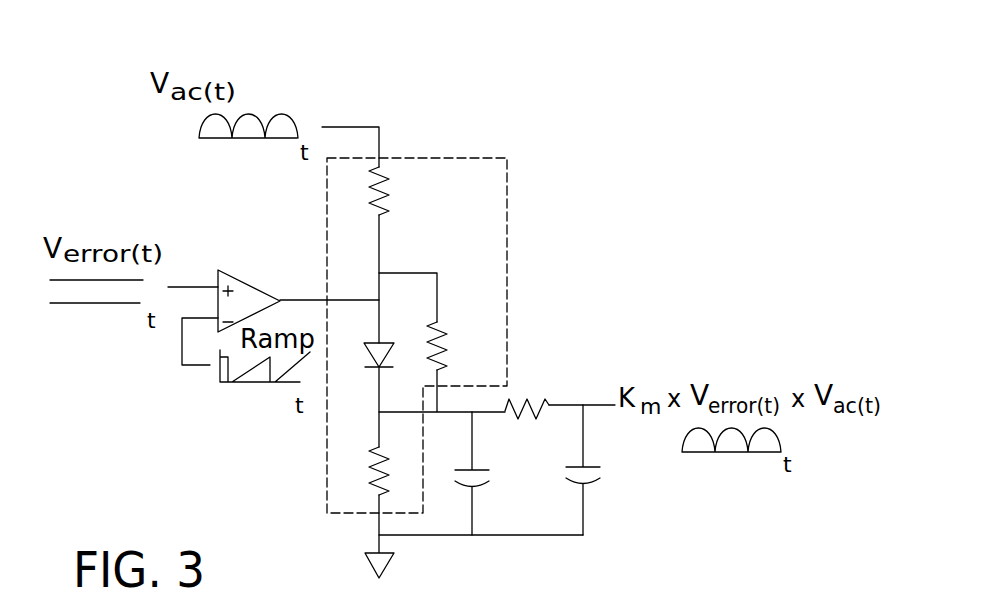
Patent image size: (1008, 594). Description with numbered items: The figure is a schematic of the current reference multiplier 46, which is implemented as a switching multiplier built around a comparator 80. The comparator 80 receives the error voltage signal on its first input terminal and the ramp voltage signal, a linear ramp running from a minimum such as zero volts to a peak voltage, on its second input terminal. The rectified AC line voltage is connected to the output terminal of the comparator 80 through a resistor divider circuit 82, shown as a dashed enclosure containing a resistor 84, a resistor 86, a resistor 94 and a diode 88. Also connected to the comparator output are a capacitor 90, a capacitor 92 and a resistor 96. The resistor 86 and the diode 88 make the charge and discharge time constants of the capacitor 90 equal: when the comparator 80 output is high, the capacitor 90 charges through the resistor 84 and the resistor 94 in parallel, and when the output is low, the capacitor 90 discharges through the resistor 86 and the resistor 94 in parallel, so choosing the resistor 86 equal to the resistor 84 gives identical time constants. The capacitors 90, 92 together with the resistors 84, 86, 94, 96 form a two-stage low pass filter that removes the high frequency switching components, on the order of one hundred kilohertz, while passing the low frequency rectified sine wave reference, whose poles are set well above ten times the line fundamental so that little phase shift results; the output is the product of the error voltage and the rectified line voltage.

The current reference multiplier 46 is at (555, 60).
The comparator 80 is at (249, 283).
The resistor divider circuit 82 is at (460, 158).
The resistor 84 is at (392, 190).
The resistor 86 is at (443, 352).
The diode 88 is at (388, 343).
The capacitor 90 is at (477, 485).
The capacitor 92 is at (590, 487).
The resistor 94 is at (373, 472).
The resistor 96 is at (538, 398).